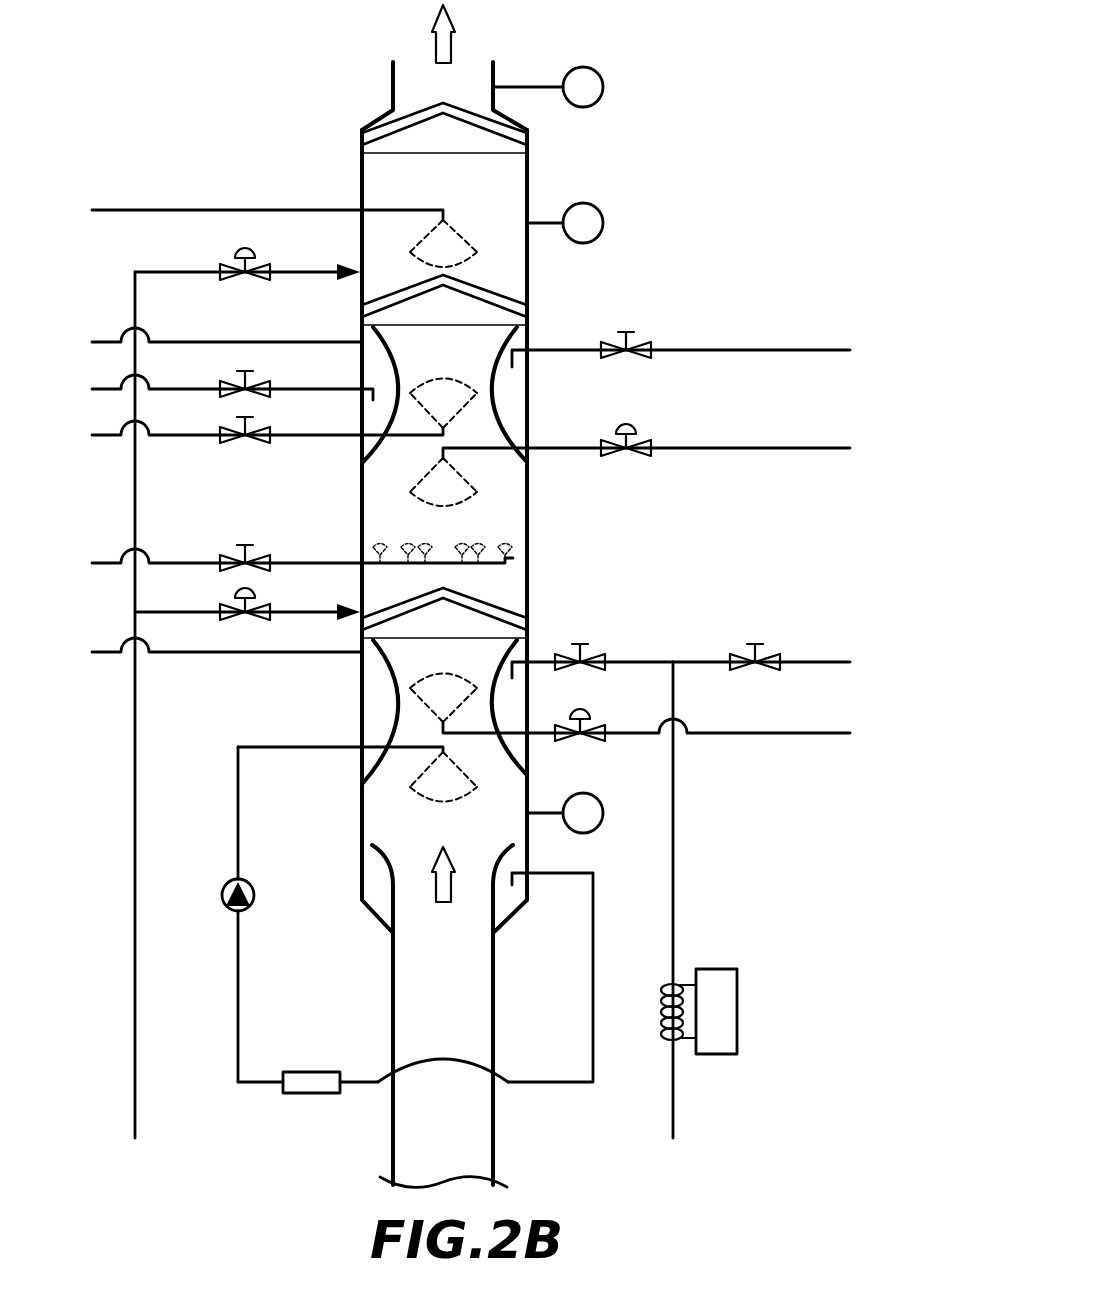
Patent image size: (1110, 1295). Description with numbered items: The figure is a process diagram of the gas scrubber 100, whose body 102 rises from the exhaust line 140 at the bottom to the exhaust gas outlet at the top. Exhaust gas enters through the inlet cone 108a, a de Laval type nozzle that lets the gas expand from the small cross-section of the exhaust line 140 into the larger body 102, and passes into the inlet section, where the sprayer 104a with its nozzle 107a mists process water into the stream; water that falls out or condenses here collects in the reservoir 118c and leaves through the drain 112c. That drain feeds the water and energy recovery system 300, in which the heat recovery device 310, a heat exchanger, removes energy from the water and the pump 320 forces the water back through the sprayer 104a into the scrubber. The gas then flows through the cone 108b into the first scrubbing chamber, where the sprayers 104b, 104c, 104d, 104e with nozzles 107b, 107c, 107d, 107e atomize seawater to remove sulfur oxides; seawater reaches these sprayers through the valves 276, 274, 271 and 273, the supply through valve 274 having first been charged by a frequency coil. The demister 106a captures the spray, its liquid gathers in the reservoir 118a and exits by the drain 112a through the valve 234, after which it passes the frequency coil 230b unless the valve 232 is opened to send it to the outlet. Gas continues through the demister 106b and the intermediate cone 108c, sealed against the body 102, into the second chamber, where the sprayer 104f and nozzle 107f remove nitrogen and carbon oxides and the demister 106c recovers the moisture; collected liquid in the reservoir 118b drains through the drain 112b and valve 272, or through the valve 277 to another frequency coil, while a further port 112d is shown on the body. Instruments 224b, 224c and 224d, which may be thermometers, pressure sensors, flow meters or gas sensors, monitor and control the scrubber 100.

The gas scrubber 100 is at (668, 202).
The body 102 is at (527, 167).
The sprayer 104a is at (408, 800).
The sprayer 104b is at (418, 672).
The sprayer 104c is at (510, 546).
The sprayer 104d is at (488, 485).
The sprayer 104e is at (418, 380).
The sprayer 104f is at (487, 257).
The demister 106a is at (412, 605).
The demister 106b is at (392, 306).
The demister 106c is at (398, 132).
The nozzle 107a is at (440, 754).
The nozzle 107b is at (563, 709).
The nozzle 107c is at (358, 552).
The nozzle 107d is at (562, 458).
The nozzle 107e is at (267, 420).
The nozzle 107f is at (447, 220).
The inlet cone 108a is at (382, 903).
The cone 108b is at (517, 759).
The intermediate cone 108c is at (490, 427).
The drain 112a is at (681, 861).
The drain 112b is at (232, 375).
The drain 112c is at (527, 873).
The port 112d is at (681, 336).
The reservoir 118a is at (378, 723).
The reservoir 118b is at (505, 388).
The reservoir 118c is at (507, 907).
The exhaust line 140 is at (497, 947).
The instrumentation 224b is at (603, 223).
The instrumentation 224c is at (598, 73).
The instrument 224d is at (590, 798).
The frequency coil 230b is at (720, 969).
The valve 232 is at (766, 652).
The valve 234 is at (586, 652).
The valve 271 is at (240, 558).
The valve 272 is at (646, 350).
The valve 273 is at (219, 420).
The valve 274 is at (640, 456).
The valve 276 is at (586, 722).
The valve 277 is at (219, 373).
The water and energy recovery system 300 is at (520, 1083).
The heat recovery device 310 is at (312, 1093).
The pump 320 is at (252, 888).